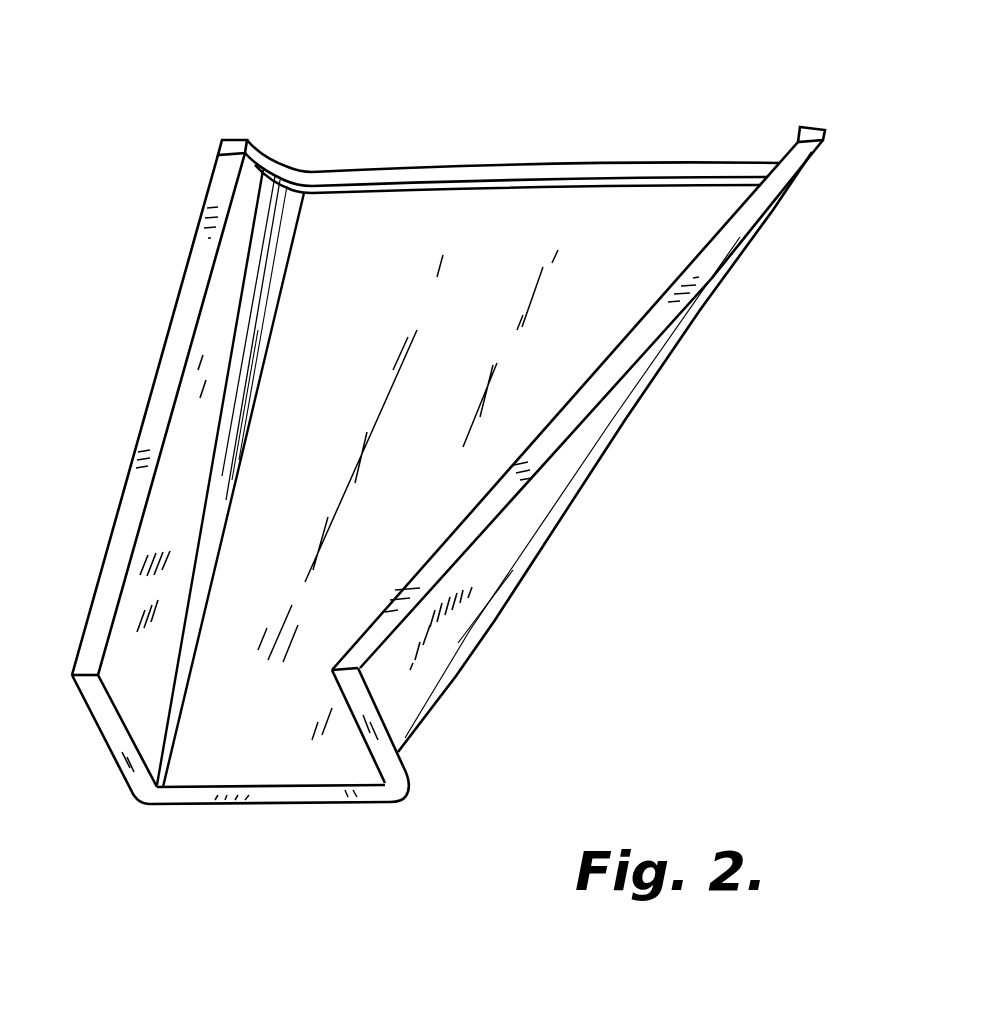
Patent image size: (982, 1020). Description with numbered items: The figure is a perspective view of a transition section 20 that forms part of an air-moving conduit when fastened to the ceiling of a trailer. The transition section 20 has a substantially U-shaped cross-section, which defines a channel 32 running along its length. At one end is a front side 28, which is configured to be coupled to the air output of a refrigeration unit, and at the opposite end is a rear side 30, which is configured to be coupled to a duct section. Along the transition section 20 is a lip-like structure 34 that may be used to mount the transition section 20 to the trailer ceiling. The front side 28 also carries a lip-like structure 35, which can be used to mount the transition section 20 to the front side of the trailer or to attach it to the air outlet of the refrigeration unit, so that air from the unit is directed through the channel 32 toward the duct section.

The transition section 20 is at (843, 105).
The front side 28 is at (398, 783).
The rear side 30 is at (255, 152).
The channel 32 is at (237, 727).
The lip-like structure 34 is at (548, 452).
The lip-like structure 35 is at (377, 703).